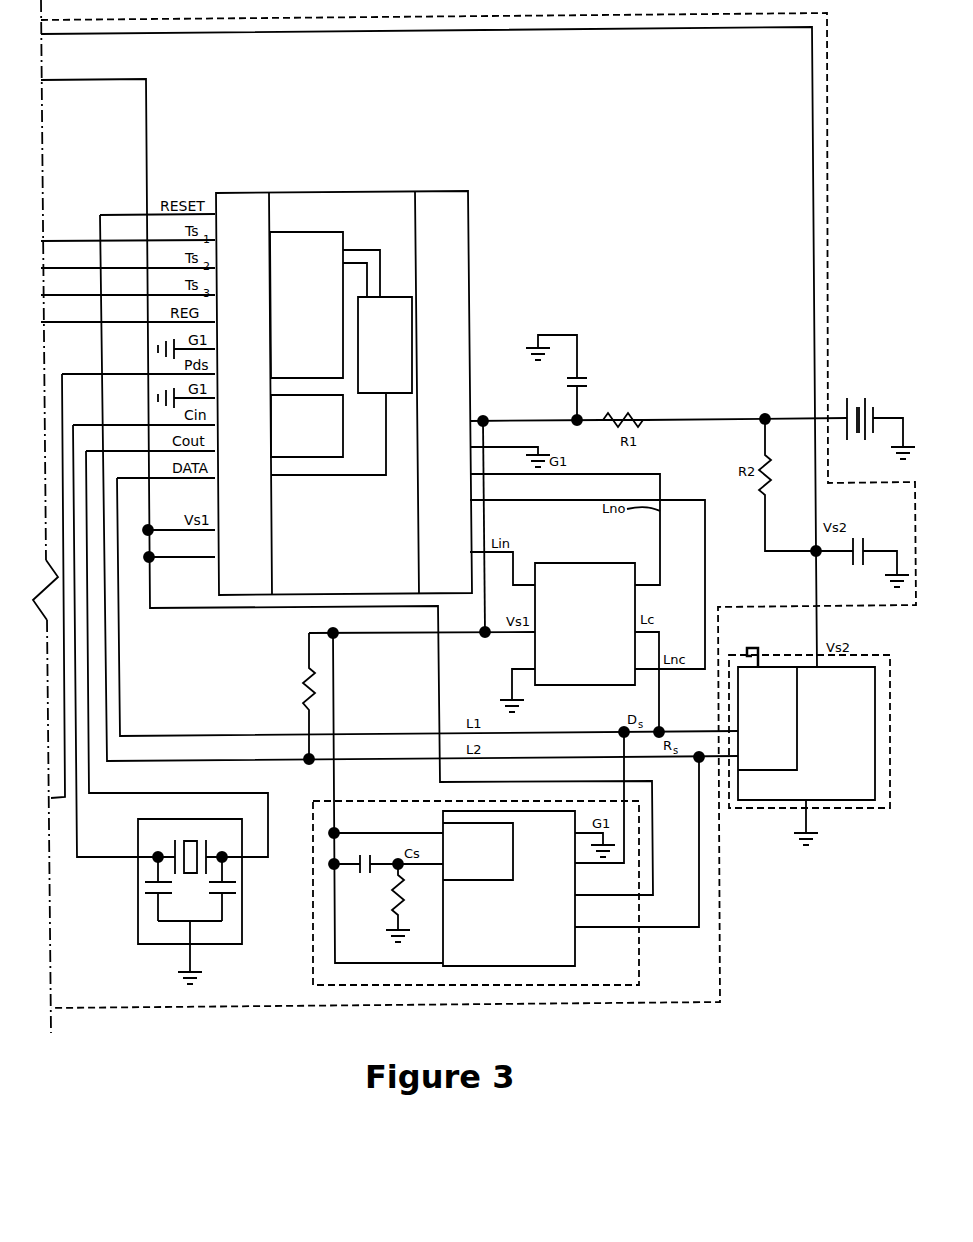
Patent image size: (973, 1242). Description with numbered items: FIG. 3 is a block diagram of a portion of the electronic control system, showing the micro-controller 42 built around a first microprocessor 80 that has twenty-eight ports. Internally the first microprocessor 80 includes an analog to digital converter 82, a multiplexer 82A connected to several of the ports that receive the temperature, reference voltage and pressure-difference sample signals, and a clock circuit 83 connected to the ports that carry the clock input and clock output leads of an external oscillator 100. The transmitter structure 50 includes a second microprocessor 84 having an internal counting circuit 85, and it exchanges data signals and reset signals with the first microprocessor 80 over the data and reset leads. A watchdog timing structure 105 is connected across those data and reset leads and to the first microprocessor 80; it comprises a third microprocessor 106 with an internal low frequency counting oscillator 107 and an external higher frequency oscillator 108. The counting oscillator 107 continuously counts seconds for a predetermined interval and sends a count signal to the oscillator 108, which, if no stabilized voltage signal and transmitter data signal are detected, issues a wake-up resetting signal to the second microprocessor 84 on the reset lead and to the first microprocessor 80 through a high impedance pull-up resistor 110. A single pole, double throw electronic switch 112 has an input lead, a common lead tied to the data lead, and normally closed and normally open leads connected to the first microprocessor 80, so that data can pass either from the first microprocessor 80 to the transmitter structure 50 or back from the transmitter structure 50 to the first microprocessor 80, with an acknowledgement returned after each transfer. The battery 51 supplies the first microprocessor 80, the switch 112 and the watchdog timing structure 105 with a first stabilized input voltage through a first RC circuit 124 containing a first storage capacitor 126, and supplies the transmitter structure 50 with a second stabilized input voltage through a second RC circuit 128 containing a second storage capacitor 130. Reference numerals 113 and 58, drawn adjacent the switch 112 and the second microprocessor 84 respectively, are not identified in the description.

The micro-controller 42 is at (829, 222).
The first microprocessor 80 is at (470, 269).
The multiplexer 82A is at (306, 305).
The analog to digital converter 82 is at (341, 362).
The clock circuit 83 is at (325, 447).
The first storage capacitor 126 is at (582, 376).
The first RC circuit 124 is at (616, 392).
The battery 51 is at (860, 400).
The second storage capacitor 130 is at (857, 538).
The second RC circuit 128 is at (812, 553).
The electronic switch 112 is at (568, 562).
The switch ground 113 is at (588, 686).
The high impedance pull-up resistor 110 is at (303, 690).
The higher frequency oscillator 108 is at (389, 896).
The internal counting oscillator 107 is at (488, 838).
The third microprocessor 106 is at (443, 817).
The watchdog timing structure 105 is at (314, 965).
The oscillator 100 is at (138, 893).
The second microprocessor 84 is at (806, 762).
The transmitter structure 50 is at (838, 812).
The count indicator 58 is at (755, 646).
The counting circuit 85 is at (783, 667).